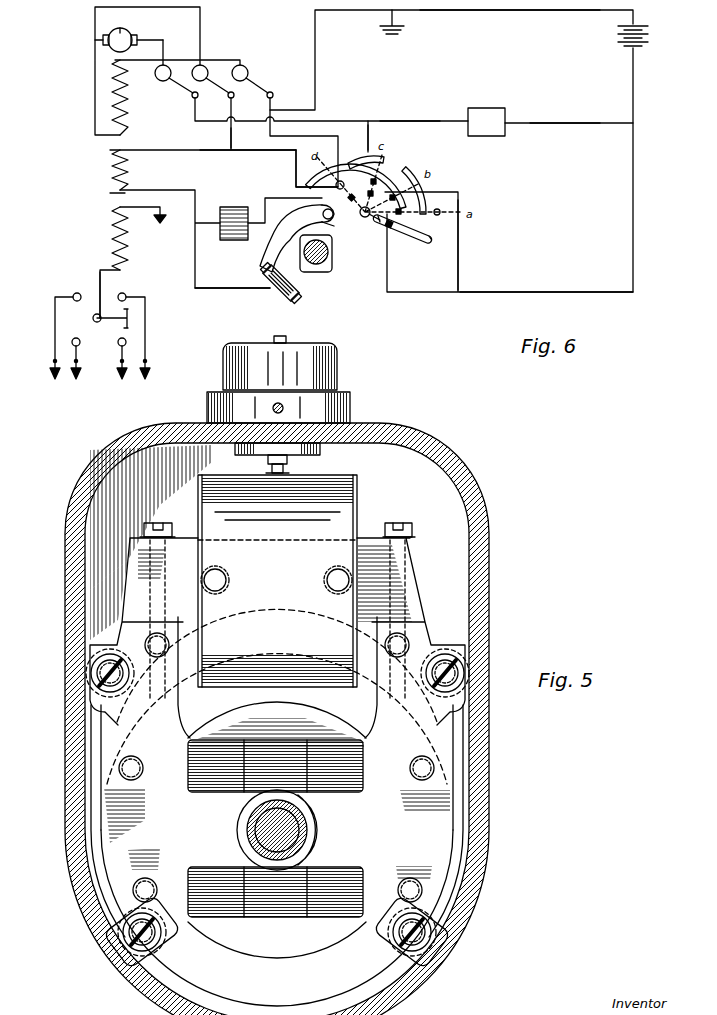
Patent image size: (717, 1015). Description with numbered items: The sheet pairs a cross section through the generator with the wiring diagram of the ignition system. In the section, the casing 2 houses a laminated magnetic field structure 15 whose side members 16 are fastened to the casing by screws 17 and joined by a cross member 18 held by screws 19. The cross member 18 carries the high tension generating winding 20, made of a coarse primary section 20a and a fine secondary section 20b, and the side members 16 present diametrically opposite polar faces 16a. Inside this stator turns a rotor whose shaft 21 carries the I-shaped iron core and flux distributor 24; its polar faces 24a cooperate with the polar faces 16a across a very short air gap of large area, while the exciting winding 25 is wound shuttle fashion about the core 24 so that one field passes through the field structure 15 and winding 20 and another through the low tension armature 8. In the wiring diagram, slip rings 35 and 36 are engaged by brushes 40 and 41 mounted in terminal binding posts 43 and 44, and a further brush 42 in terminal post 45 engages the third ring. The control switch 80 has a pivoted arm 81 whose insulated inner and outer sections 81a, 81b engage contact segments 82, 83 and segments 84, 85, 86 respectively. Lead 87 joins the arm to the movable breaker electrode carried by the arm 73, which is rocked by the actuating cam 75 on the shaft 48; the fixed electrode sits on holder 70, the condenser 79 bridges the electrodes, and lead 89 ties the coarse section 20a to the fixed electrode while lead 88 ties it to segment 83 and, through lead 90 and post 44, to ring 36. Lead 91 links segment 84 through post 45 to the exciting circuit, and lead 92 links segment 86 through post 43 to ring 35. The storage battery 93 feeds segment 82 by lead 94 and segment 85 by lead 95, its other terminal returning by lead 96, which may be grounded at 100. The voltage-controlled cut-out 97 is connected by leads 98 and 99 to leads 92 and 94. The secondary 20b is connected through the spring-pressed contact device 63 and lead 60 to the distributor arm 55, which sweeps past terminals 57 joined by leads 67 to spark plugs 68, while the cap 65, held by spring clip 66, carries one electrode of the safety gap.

In FIG. 5, the casing 2 is at (491, 614).
In FIG. 6, the low tension armature 8 is at (126, 30).
In FIG. 5, the laminated magnetic field structure 15 is at (425, 590).
In FIG. 5, the side members 16 is at (430, 640).
In FIG. 5, the polar faces 16a is at (145, 808).
In FIG. 5, the screws 17 is at (110, 655).
In FIG. 5, the cross member 18 is at (183, 545).
In FIG. 5, the screws 19 is at (146, 528).
In FIG. 6, the high tension generating winding 20 is at (103, 201).
In FIG. 5, the high tension generating winding 20 is at (210, 523).
In FIG. 6, the coarse primary section 20a is at (108, 168).
In FIG. 6, the fine secondary section 20b is at (108, 228).
In FIG. 5, the shaft 21 is at (308, 830).
In FIG. 5, the iron core and flux distributor 24 is at (272, 955).
In FIG. 5, the polar faces 24a is at (250, 702).
In FIG. 6, the exciting winding 25 is at (130, 106).
In FIG. 5, the exciting winding 25 is at (206, 786).
In FIG. 6, the slip ring 35 is at (163, 73).
In FIG. 6, the slip ring 36 is at (200, 73).
In FIG. 6, the brush 40 is at (181, 86).
In FIG. 6, the brush 41 is at (217, 86).
In FIG. 6, the brush 42 is at (261, 81).
In FIG. 6, the terminal binding post 43 is at (191, 97).
In FIG. 6, the terminal binding post 44 is at (228, 97).
In FIG. 6, the terminal binding post 45 is at (274, 96).
In FIG. 6, the shaft 48 is at (315, 258).
In FIG. 6, the radial distributor arm 55 is at (110, 322).
In FIG. 6, the terminals 57 is at (240, 73).
In FIG. 6, the lead 60 is at (103, 290).
In FIG. 5, the lead 60 is at (272, 409).
In FIG. 5, the spring-pressed contact device 63 is at (286, 470).
In FIG. 5, the cap 65 is at (338, 369).
In FIG. 5, the spring clip 66 is at (283, 337).
In FIG. 6, the leads 67 is at (54, 323).
In FIG. 6, the spark plugs 68 is at (50, 368).
In FIG. 6, the holder 70 is at (285, 298).
In FIG. 6, the arm 73 is at (297, 238).
In FIG. 6, the actuating cam 75 is at (325, 268).
In FIG. 6, the condenser 79 is at (226, 242).
In FIG. 6, the control switch 80 is at (383, 228).
In FIG. 6, the pivoted arm 81 is at (428, 242).
In FIG. 6, the inner section 81a is at (374, 220).
In FIG. 6, the outer section 81b is at (430, 236).
In FIG. 6, the contact segment 82 is at (392, 230).
In FIG. 6, the contact segment 83 is at (337, 211).
In FIG. 6, the segment 84 is at (385, 172).
In FIG. 6, the segment 85 is at (425, 186).
In FIG. 6, the segment 86 is at (358, 155).
In FIG. 6, the lead 87 is at (330, 228).
In FIG. 6, the lead 88 is at (256, 151).
In FIG. 6, the lead 89 is at (226, 292).
In FIG. 6, the lead 90 is at (230, 136).
In FIG. 6, the lead 91 is at (296, 151).
In FIG. 6, the lead 92 is at (366, 128).
In FIG. 6, the storage battery 93 is at (650, 31).
In FIG. 6, the lead 94 is at (502, 295).
In FIG. 6, the lead 95 is at (461, 244).
In FIG. 6, the lead 96 is at (522, 9).
In FIG. 6, the automatic voltage-controlled cut-out device 97 is at (484, 137).
In FIG. 6, the lead 98 is at (414, 120).
In FIG. 6, the lead 99 is at (556, 128).
In FIG. 6, the ground 100 is at (384, 37).